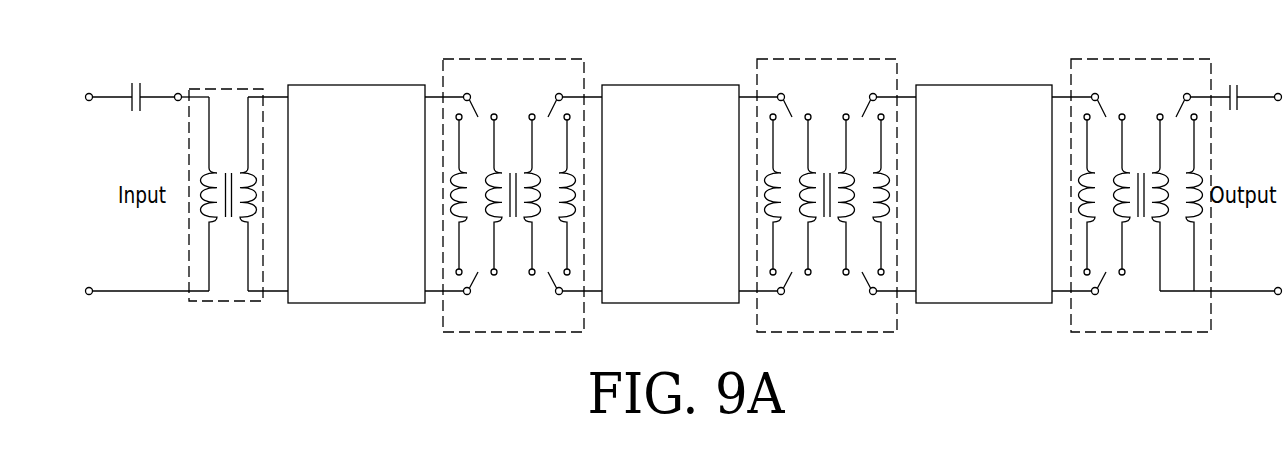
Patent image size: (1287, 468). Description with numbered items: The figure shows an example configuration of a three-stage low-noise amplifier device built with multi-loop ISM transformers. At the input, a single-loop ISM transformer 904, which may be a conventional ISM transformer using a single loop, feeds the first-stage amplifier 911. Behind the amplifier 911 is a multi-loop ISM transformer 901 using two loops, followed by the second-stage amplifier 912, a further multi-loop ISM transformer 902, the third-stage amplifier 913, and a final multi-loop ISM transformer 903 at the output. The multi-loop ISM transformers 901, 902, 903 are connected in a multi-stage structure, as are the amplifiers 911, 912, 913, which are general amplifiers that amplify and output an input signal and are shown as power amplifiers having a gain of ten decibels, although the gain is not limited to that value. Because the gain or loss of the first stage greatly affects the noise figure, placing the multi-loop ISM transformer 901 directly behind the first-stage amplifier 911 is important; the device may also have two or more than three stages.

The single-loop ISM transformer 904 is at (225, 88).
The amplifier 911 is at (355, 84).
The multi-loop ISM transformer 901 is at (512, 58).
The amplifier 912 is at (668, 84).
The multi-loop ISM transformer 902 is at (827, 58).
The amplifier 913 is at (983, 84).
The multi-loop ISM transformer 903 is at (1140, 58).